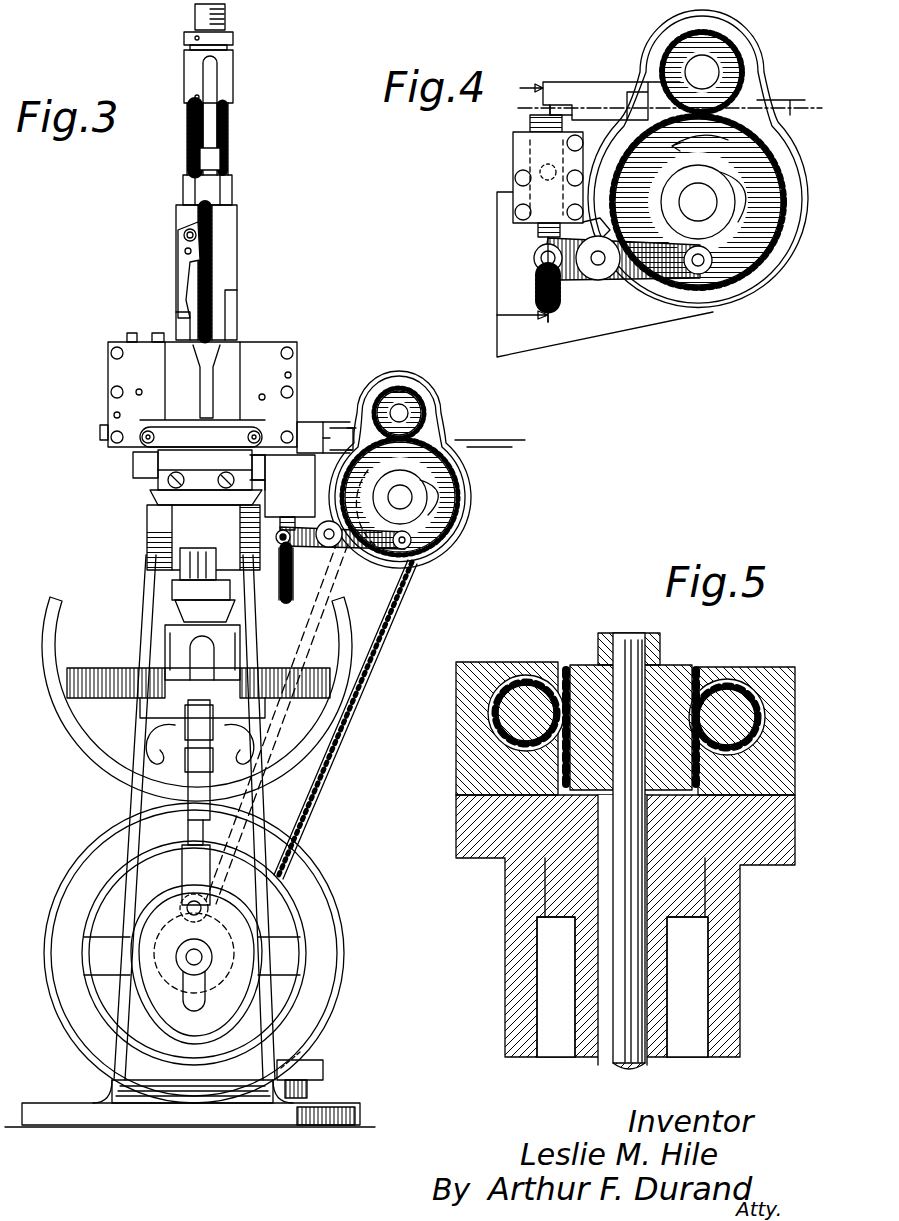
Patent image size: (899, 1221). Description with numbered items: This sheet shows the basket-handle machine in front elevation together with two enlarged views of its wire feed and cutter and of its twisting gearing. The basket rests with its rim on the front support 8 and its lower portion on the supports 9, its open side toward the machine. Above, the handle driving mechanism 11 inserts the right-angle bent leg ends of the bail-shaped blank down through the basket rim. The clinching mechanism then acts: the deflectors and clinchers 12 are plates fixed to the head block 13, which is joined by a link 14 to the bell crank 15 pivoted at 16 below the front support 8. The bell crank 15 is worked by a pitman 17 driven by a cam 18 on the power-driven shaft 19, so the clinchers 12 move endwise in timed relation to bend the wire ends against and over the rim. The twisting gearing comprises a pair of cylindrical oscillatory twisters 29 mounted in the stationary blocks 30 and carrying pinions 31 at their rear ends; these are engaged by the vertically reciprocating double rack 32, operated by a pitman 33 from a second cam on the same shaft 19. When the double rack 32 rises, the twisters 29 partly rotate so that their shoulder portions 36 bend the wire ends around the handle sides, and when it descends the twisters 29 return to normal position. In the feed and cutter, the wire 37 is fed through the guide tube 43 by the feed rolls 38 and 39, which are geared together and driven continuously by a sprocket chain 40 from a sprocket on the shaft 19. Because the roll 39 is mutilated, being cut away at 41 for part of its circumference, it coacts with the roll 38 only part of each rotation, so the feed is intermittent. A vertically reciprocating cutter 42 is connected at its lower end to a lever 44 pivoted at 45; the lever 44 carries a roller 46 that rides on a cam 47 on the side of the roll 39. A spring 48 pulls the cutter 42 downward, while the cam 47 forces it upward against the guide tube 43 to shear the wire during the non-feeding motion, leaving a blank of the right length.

In FIG. 3, the front support 8 is at (185, 497).
In FIG. 3, the supports 9 is at (98, 745).
In FIG. 3, the handle driving mechanism 11 is at (212, 393).
In FIG. 3, the deflectors and clinchers 12 is at (182, 573).
In FIG. 3, the head block 13 is at (192, 603).
In FIG. 3, the link 14 is at (172, 530).
In FIG. 3, the bell crank 15 is at (192, 623).
In FIG. 3, the pivot 16 is at (165, 662).
In FIG. 3, the pitman 17 is at (197, 775).
In FIG. 4, the pitman 17 is at (519, 204).
In FIG. 3, the cam 18 is at (142, 927).
In FIG. 3, the shaft 19 is at (190, 957).
In FIG. 3, the twisters 29 is at (226, 478).
In FIG. 5, the stationary blocks 30 is at (478, 668).
In FIG. 5, the pinions 31 is at (528, 695).
In FIG. 5, the double rack 32 is at (592, 690).
In FIG. 5, the pitman 33 is at (612, 1050).
In FIG. 3, the shoulder portions 36 is at (176, 480).
In FIG. 3, the wire 37 is at (525, 440).
In FIG. 4, the wire 37 is at (815, 118).
In FIG. 3, the feed roll 38 is at (405, 398).
In FIG. 4, the feed roll 38 is at (730, 62).
In FIG. 3, the feed roll 39 is at (455, 495).
In FIG. 4, the feed roll 39 is at (742, 270).
In FIG. 3, the sprocket chain 40 is at (350, 706).
In FIG. 3, the cut-away portion 41 is at (425, 442).
In FIG. 4, the cut-away portion 41 is at (615, 172).
In FIG. 3, the cutter 42 is at (288, 518).
In FIG. 4, the cutter 42 is at (530, 125).
In FIG. 4, the guide tube 43 is at (566, 104).
In FIG. 3, the lever 44 is at (383, 570).
In FIG. 4, the lever 44 is at (628, 280).
In FIG. 3, the pivot 45 is at (328, 540).
In FIG. 4, the pivot 45 is at (598, 268).
In FIG. 3, the roller 46 is at (410, 556).
In FIG. 4, the roller 46 is at (700, 282).
In FIG. 3, the cam 47 is at (432, 518).
In FIG. 4, the cam 47 is at (740, 215).
In FIG. 3, the spring 48 is at (278, 596).
In FIG. 4, the spring 48 is at (535, 290).